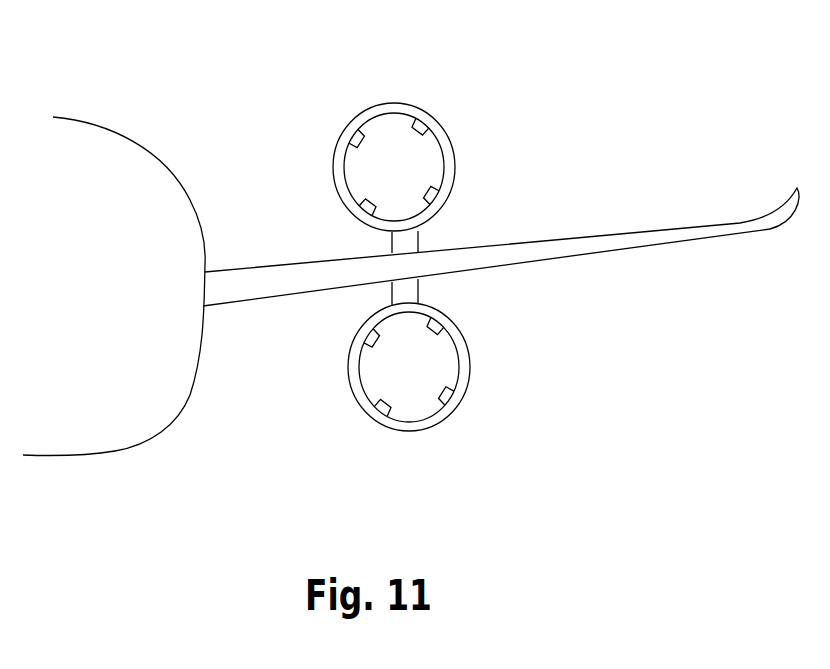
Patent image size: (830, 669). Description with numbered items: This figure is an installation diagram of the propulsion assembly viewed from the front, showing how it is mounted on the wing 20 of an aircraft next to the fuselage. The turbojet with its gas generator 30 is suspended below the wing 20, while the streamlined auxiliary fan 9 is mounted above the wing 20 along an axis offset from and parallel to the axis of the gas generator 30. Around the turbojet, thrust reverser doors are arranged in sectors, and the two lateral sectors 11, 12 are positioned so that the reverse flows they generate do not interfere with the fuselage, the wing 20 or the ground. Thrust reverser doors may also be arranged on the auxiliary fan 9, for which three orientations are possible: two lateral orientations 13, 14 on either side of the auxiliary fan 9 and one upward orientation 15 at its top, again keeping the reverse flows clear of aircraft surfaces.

The auxiliary fan 9 is at (411, 268).
The lateral thrust reverser door sector 11 is at (358, 372).
The lateral thrust reverser door sector 12 is at (463, 365).
The lateral thrust reverser door orientation 13 is at (337, 172).
The lateral thrust reverser door orientation 14 is at (452, 155).
The upward thrust reverser door orientation 15 is at (391, 112).
The wing 20 is at (614, 265).
The gas generator 30 is at (412, 374).